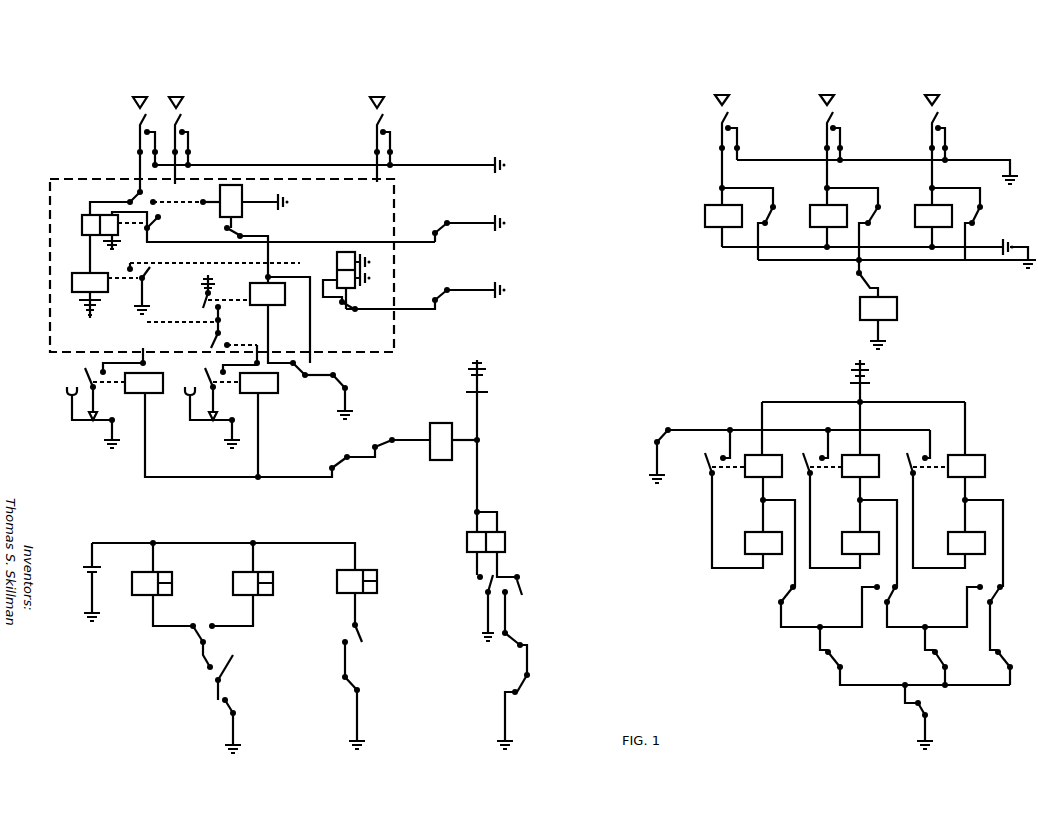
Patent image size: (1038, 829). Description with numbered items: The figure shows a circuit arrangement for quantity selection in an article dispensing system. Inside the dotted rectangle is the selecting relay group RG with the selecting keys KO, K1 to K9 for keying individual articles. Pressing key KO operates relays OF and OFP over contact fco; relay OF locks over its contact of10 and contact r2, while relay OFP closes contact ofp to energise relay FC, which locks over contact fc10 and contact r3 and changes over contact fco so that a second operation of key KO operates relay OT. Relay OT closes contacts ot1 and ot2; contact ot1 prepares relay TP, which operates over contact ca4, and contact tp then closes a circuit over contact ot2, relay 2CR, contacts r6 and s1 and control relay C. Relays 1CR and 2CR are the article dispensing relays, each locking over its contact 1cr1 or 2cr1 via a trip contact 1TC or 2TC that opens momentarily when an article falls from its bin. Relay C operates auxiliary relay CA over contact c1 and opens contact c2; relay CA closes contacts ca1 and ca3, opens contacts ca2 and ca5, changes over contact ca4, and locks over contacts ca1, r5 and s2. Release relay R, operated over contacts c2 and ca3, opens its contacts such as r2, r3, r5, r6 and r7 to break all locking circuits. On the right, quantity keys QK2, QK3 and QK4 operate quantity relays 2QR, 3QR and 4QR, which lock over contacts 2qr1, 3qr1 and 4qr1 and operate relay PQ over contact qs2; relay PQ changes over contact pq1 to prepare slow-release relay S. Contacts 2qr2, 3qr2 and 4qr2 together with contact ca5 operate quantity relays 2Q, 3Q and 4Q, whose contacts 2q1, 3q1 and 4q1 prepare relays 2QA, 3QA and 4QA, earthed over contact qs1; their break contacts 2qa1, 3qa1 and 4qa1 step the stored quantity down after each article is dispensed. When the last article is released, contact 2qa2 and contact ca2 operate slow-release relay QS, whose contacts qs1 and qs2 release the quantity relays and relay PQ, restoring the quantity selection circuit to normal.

The selecting key KO is at (142, 135).
The selecting key K1 is at (177, 131).
The selecting key K9 is at (378, 130).
The selecting relay group RG is at (50, 263).
The changeover contact of relay FC fco is at (155, 200).
The relay OT is at (254, 200).
The contact of relay OT ot1 is at (246, 247).
The relay OF is at (89, 244).
The locking contact of relay OF of10 is at (273, 227).
The contact of release relay R r2 is at (461, 228).
The relay OFP is at (80, 288).
The contact of relay OFP ofp is at (204, 288).
The contact of relay TP tp is at (198, 304).
The contact of relay OT ot2 is at (219, 346).
The relay TP is at (275, 315).
The relay FC is at (338, 278).
The locking contact of relay FC fc10 is at (335, 298).
The contact of release relay R r3 is at (426, 295).
The locking contact of relay 1CR 1cr1 is at (112, 384).
The trip contact 1TC is at (85, 412).
The article dispensing relay 1CR is at (185, 425).
The locking contact of relay 2CR 2cr1 is at (230, 389).
The trip contact 2TC is at (208, 412).
The article dispensing relay 2CR is at (251, 426).
The changeover contact of relay CA ca4 is at (311, 377).
The contact of release relay R r7 is at (346, 395).
The contact of release relay R r6 is at (316, 462).
The contact of relay S s1 is at (393, 442).
The control relay C is at (459, 436).
The auxiliary relay CA is at (498, 530).
The contact of relay C c1 is at (475, 596).
The locking contact of relay CA ca1 is at (522, 592).
The contact of release relay R r5 is at (507, 652).
The contact of relay S s2 is at (519, 710).
The release relay R is at (162, 583).
The slow-release relay S is at (242, 583).
The changeover contact of relay PQ pq1 is at (201, 639).
The contact of relay CA ca3 is at (221, 674).
The contact of relay C c2 is at (237, 725).
The slow-release relay QS is at (351, 591).
The contact of relay 2QA 2qa2 is at (360, 649).
The contact of relay CA ca2 is at (362, 711).
The quantity key QK2 is at (719, 133).
The quantity key QK3 is at (823, 133).
The quantity key QK4 is at (928, 133).
The quantity relay 2QR is at (708, 216).
The locking contact of relay 2QR 2qr1 is at (756, 224).
The quantity relay 3QR is at (817, 217).
The locking contact of relay 3QR 3qr1 is at (859, 230).
The contact of relay QS qs2 is at (875, 283).
The relay PQ is at (862, 323).
The quantity relay 4QR is at (921, 217).
The locking contact of relay 4QR 4qr1 is at (963, 224).
The contact of relay QS qs1 is at (778, 455).
The quantity relay 2Q is at (766, 467).
The contact of relay 2Q 2q1 is at (730, 497).
The relay 2QA is at (754, 535).
The break contact of relay 2QA 2qa1 is at (819, 565).
The contact of relay 2QR 2qr2 is at (915, 657).
The quantity relay 3Q is at (863, 467).
The contact of relay 3Q 3q1 is at (830, 497).
The relay 3QA is at (851, 535).
The break contact of relay 3QA 3qa1 is at (920, 565).
The contact of relay 3QR 3qr2 is at (944, 656).
The quantity relay 4Q is at (969, 467).
The contact of relay 4Q 4q1 is at (933, 499).
The relay 4QA is at (957, 535).
The break contact of relay 4QA 4qa1 is at (984, 575).
The contact of relay 4QR 4qr2 is at (1010, 661).
The contact of relay CA ca5 is at (928, 717).